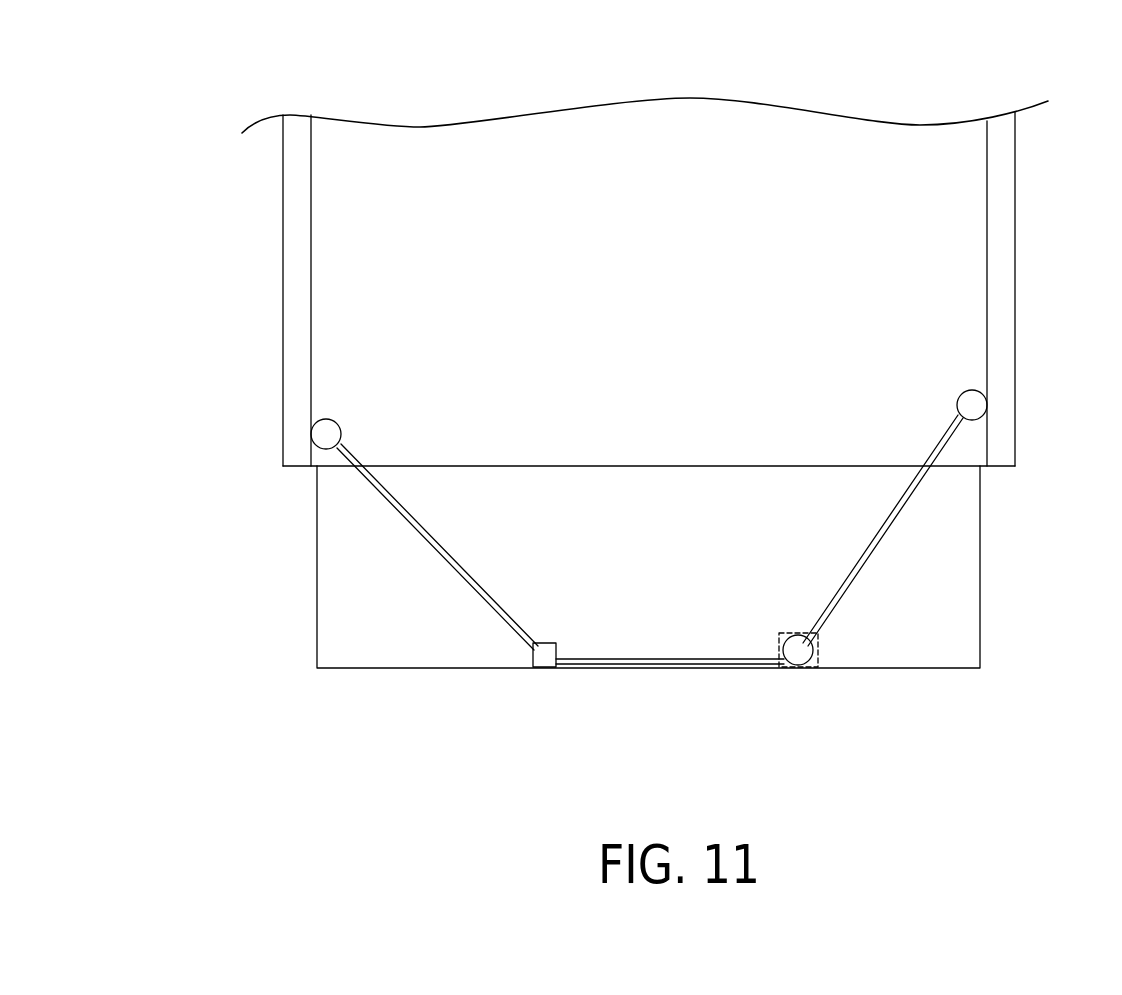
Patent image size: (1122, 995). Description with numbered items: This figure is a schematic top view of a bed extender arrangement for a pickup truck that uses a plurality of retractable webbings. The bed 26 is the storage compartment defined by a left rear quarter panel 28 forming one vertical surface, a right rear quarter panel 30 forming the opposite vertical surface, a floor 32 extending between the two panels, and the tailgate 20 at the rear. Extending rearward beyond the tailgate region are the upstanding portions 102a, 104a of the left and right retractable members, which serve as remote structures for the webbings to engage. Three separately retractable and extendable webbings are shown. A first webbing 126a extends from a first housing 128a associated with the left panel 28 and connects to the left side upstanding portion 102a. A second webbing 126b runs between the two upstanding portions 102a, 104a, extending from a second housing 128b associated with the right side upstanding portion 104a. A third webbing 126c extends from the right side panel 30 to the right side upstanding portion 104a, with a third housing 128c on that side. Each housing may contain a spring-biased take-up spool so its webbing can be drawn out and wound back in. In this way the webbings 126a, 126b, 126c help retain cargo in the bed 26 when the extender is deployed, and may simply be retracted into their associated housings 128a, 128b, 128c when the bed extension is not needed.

The tailgate 20 is at (317, 562).
The bed 26 is at (665, 297).
The left rear quarter panel 28 is at (283, 283).
The right rear quarter panel 30 is at (1008, 258).
The floor 32 is at (717, 97).
The upstanding portion 102a is at (548, 670).
The upstanding portion 104a is at (805, 668).
The first webbing 126a is at (435, 543).
The second webbing 126b is at (692, 666).
The third webbing 126c is at (886, 545).
The first housing 128a is at (327, 418).
The second housing 128b is at (798, 634).
The third housing 128c is at (963, 390).